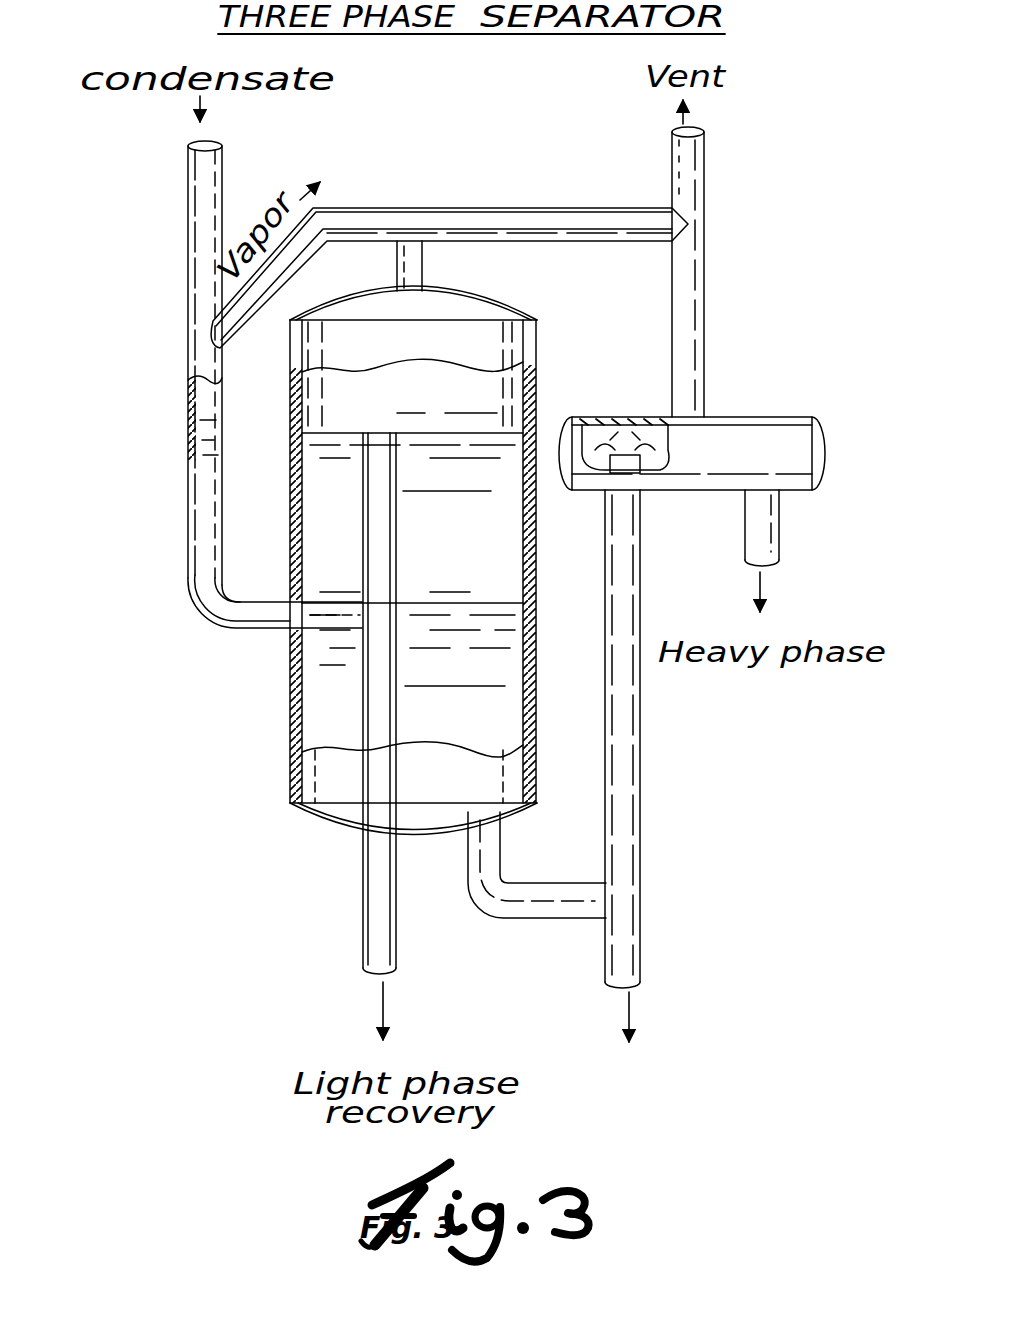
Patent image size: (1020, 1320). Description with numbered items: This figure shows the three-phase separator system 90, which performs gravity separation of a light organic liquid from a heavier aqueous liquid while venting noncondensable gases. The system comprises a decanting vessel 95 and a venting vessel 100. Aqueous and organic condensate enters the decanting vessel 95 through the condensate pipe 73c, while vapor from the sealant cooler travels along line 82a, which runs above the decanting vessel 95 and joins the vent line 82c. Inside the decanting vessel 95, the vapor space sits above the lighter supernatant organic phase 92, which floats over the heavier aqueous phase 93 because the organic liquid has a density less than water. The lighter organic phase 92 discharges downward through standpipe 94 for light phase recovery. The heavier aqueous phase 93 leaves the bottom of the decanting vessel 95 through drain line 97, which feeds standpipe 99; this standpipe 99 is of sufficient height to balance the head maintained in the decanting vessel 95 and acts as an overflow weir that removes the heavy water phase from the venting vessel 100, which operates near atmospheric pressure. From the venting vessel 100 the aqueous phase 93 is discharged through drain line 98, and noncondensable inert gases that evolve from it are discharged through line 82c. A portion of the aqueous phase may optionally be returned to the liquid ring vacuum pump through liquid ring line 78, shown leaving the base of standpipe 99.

The condensate line 73c is at (190, 230).
The vapor line 82a is at (567, 230).
The vent line 82c is at (692, 167).
The three-phase separator system 90 is at (365, 639).
The lighter supernatant organic phase 92 is at (487, 541).
The heavier aqueous phase 93 is at (466, 736).
The standpipe 94 is at (372, 903).
The decanting vessel 95 is at (522, 345).
The drain line 97 is at (540, 900).
The drain line 98 is at (770, 523).
The standpipe 99 is at (632, 568).
The venting vessel 100 is at (770, 422).
The liquid ring line 78 is at (632, 1010).